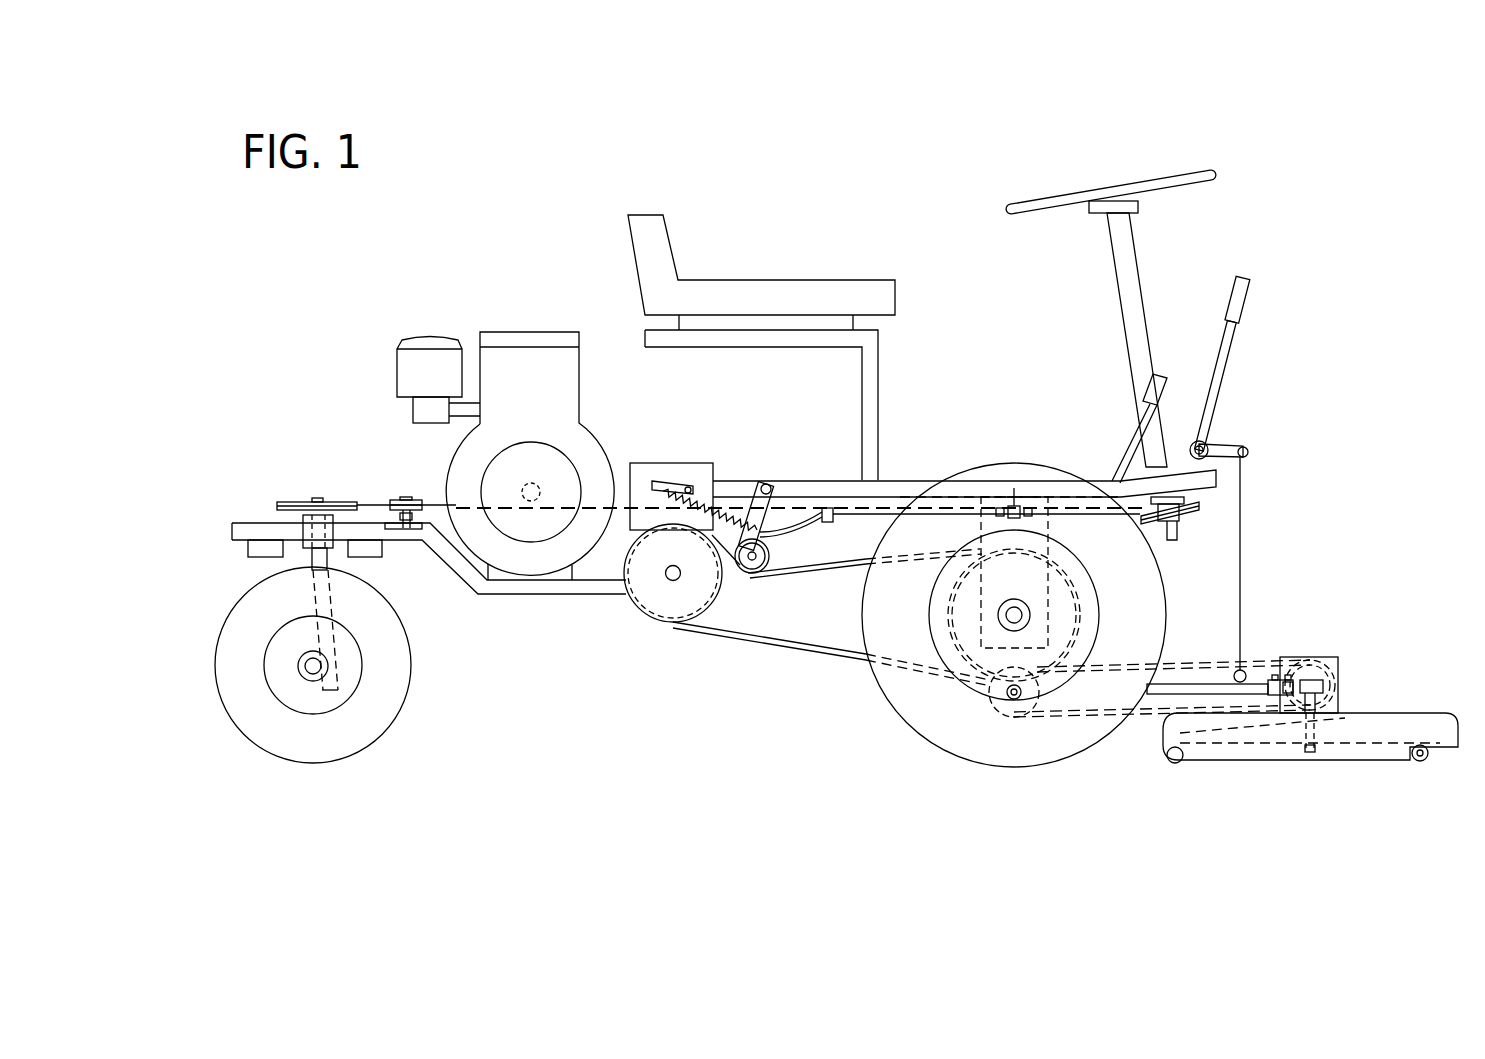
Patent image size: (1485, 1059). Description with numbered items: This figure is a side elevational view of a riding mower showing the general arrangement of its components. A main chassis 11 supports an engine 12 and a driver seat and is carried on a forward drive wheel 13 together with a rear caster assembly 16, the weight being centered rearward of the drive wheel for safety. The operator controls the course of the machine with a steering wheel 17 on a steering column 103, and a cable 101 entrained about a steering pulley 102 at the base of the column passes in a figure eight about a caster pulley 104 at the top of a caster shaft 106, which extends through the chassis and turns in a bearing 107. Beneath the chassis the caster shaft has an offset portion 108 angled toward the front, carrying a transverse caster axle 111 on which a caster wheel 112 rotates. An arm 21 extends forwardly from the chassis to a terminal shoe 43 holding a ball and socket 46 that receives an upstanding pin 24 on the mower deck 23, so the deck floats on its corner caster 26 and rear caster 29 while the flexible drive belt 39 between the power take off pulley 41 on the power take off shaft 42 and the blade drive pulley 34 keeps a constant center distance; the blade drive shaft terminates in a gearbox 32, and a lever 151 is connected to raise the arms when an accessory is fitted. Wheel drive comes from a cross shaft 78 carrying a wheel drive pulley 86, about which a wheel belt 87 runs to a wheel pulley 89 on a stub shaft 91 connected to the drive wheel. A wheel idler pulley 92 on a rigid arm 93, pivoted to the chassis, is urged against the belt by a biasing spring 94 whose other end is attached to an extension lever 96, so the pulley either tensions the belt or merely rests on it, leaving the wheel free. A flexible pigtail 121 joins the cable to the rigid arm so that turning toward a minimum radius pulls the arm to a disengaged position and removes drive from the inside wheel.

The main chassis 11 is at (530, 596).
The engine 12 is at (531, 362).
The forward drive wheel 13 is at (1020, 465).
The rear caster assembly 16 is at (226, 605).
The steering wheel 17 is at (1019, 212).
The arm 21 is at (1186, 690).
The mower deck 23 is at (1416, 708).
The upstanding pin 24 is at (1311, 672).
The corner caster 26 is at (1420, 762).
The caster 29 is at (1177, 765).
The gearbox 32 is at (1333, 657).
The blade drive pulley 34 is at (1340, 667).
The flexible drive belt 39 is at (1217, 662).
The power take off pulley 41 is at (1006, 718).
The power take off shaft 42 is at (989, 700).
The terminal shoe 43 is at (1270, 683).
The ball and socket 46 is at (1302, 678).
The cross shaft 78 is at (667, 580).
The wheel drive pulley 86 is at (667, 607).
The wheel belt 87 is at (788, 568).
The wheel pulley 89 is at (948, 617).
The stub shaft 91 is at (1031, 613).
The wheel idler pulley 92 is at (752, 574).
The rigid arm 93 is at (768, 500).
The biasing spring 94 is at (739, 520).
The extension lever 96 is at (681, 485).
The cable 101 is at (373, 503).
The steering pulley 102 is at (1200, 508).
The steering column 103 is at (1133, 323).
The caster pulley 104 is at (283, 500).
The caster shaft 106 is at (318, 497).
The bearing 107 is at (330, 548).
The offset portion 108 is at (334, 606).
The transverse caster axle 111 is at (305, 667).
The caster wheel 112 is at (245, 716).
The pigtail 121 is at (800, 529).
The lever 151 is at (1231, 347).